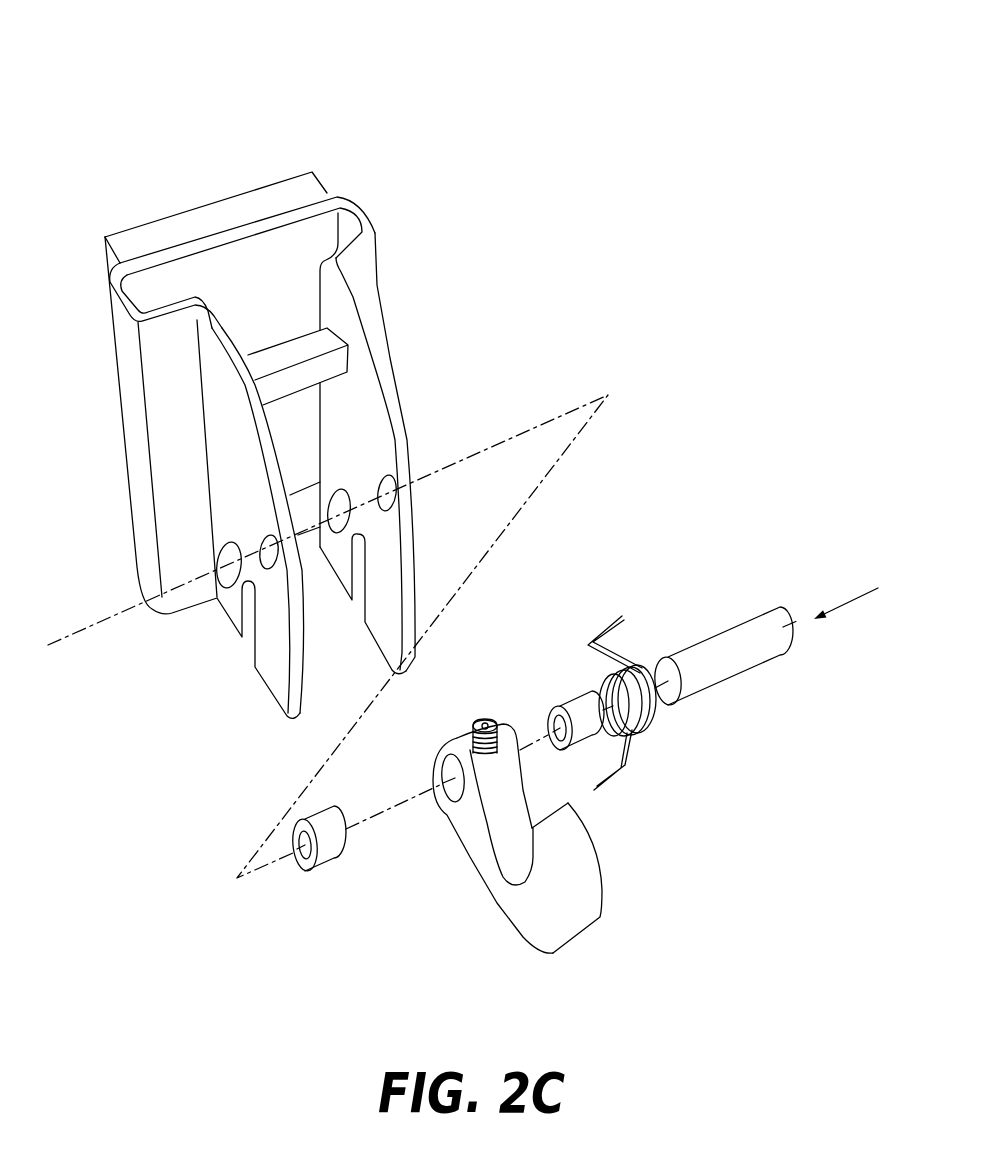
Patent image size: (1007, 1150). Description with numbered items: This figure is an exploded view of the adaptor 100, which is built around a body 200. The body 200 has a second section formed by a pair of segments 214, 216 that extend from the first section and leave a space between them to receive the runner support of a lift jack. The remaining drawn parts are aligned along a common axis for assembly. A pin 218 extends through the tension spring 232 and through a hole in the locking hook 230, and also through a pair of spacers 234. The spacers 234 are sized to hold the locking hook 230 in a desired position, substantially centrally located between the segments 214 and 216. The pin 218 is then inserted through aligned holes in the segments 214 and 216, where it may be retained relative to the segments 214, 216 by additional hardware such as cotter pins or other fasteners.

The adaptor 100 is at (118, 71).
The body 200 is at (133, 462).
The segment 214 is at (267, 676).
The segment 216 is at (400, 432).
The pin 218 is at (770, 662).
The locking hook 230 is at (585, 937).
The tension spring 232 is at (647, 737).
The spacers 234 is at (305, 872).